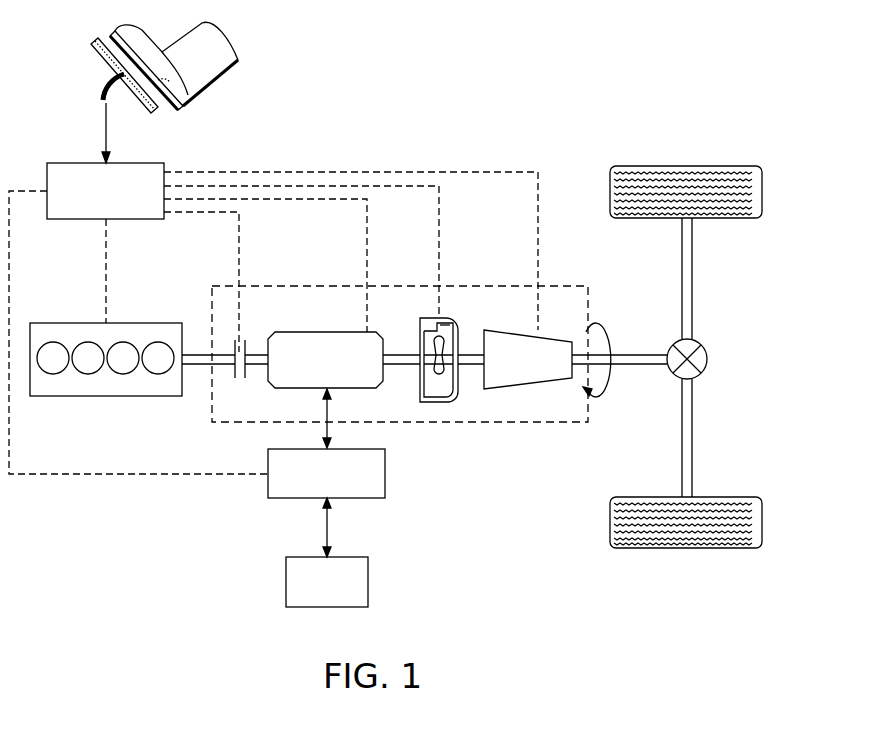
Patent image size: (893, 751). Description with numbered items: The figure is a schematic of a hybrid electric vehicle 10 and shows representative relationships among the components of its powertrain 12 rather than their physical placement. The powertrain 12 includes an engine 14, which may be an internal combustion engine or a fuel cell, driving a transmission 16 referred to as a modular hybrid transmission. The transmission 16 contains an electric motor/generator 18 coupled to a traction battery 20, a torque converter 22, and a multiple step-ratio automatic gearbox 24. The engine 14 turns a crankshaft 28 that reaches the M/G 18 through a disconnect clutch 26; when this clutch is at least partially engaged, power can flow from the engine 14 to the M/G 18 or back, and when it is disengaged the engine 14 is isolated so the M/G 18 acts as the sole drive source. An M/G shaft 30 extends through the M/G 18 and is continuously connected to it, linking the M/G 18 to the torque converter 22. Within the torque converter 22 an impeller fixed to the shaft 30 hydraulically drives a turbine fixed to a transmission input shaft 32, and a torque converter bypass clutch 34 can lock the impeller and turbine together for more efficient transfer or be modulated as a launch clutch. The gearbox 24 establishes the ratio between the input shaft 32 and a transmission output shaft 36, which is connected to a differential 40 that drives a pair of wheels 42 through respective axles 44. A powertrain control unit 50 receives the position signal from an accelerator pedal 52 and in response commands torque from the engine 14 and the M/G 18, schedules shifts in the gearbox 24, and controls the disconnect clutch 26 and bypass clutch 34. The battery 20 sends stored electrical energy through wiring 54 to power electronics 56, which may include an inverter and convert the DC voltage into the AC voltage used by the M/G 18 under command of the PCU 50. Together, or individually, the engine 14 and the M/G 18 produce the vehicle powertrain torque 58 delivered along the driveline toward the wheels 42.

The hybrid electric vehicle 10 is at (520, 98).
The powertrain 12 is at (192, 512).
The engine 14 is at (70, 323).
The transmission 16 is at (412, 284).
The electric motor/generator 18 is at (328, 332).
The traction battery 20 is at (286, 582).
The torque converter 22 is at (438, 402).
The gearbox 24 is at (528, 389).
The disconnect clutch 26 is at (247, 372).
The crankshaft 28 is at (208, 354).
The M/G shaft 30 is at (255, 352).
The transmission input shaft 32 is at (465, 352).
The torque converter bypass clutch 34 is at (446, 322).
The transmission output shaft 36 is at (640, 352).
The differential 40 is at (707, 357).
The wheels 42 is at (687, 166).
The axles 44 is at (693, 282).
The powertrain control unit 50 is at (78, 163).
The accelerator pedal 52 is at (112, 72).
The wiring 54 is at (325, 535).
The power electronics 56 is at (385, 474).
The vehicle powertrain torque 58 is at (600, 396).